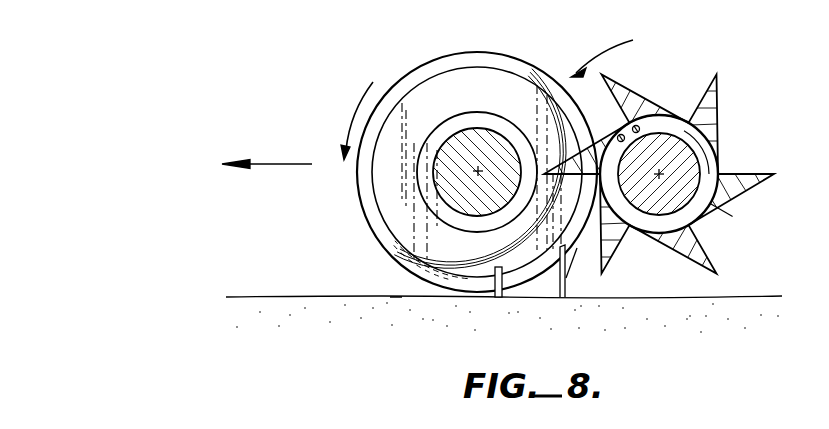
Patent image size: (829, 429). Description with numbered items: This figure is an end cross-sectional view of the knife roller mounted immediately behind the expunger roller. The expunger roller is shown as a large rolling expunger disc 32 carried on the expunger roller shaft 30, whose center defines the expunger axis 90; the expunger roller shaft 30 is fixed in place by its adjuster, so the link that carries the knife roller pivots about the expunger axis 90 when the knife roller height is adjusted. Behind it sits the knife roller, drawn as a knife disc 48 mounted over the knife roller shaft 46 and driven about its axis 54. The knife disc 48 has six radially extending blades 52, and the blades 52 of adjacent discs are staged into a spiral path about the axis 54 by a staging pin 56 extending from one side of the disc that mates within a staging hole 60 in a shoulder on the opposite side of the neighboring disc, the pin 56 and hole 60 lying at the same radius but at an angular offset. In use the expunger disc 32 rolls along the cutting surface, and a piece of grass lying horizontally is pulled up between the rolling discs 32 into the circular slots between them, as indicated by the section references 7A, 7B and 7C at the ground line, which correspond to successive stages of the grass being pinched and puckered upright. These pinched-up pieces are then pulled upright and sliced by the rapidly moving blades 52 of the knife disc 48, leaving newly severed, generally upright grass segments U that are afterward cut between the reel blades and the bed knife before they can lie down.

The expunger disc 32 is at (426, 63).
The expunger roller shaft 30 is at (475, 197).
The expunger axis 90 is at (476, 172).
The section line 7A is at (399, 292).
The tab 7B is at (497, 298).
The tab 7C is at (572, 298).
The upright grass segment U is at (560, 278).
The knife disc 48 is at (718, 164).
The knife roller shaft 46 is at (658, 200).
The axis of knife roller 54 is at (690, 152).
The staging pin 56 is at (646, 108).
The staging hole 60 is at (619, 128).
The blade 52 is at (700, 242).